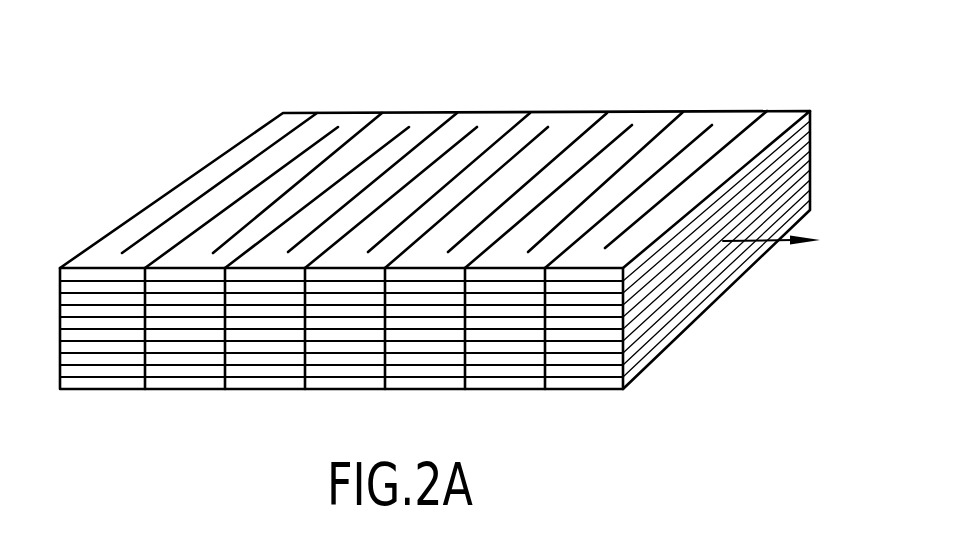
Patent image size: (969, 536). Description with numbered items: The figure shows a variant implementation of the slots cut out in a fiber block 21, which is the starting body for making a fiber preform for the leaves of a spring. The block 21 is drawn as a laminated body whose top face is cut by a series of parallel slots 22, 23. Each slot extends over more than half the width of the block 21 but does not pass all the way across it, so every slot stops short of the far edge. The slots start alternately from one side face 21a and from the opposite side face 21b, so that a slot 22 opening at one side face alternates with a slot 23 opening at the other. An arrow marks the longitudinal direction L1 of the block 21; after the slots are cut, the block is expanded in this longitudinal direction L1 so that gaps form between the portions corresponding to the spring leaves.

The fiber block 21 is at (659, 94).
The side face 21a is at (92, 393).
The opposite side face 21b is at (827, 150).
The slot 22 is at (197, 228).
The slot 23 is at (250, 160).
The longitudinal direction L1 is at (772, 242).